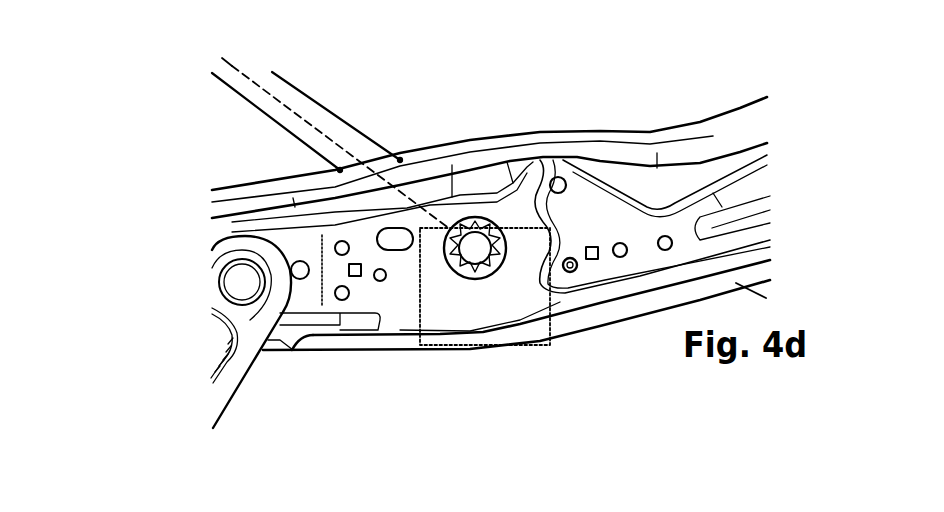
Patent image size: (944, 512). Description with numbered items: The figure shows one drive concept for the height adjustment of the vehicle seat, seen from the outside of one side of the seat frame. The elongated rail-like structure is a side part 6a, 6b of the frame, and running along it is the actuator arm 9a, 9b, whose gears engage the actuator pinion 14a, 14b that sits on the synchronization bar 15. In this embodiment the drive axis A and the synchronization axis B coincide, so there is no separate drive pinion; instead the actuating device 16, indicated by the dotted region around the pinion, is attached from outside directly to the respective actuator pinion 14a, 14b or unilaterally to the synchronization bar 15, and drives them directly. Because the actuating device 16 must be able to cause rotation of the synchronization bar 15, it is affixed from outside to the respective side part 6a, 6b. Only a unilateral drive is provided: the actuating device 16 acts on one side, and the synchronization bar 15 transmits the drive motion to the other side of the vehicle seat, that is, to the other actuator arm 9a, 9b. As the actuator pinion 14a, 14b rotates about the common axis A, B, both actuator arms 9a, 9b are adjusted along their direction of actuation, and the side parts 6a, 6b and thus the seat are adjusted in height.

The drive axis A is at (258, 122).
The synchronizing axis B is at (238, 71).
The synchronization bar 15 is at (265, 80).
The actuator arm 9a is at (489, 123).
The actuator arm 9b is at (415, 143).
The side part 6a is at (612, 161).
The side part 6b is at (570, 157).
The actuator pinion 14a is at (412, 328).
The actuator pinion 14b is at (454, 278).
The actuating device 16 is at (550, 300).